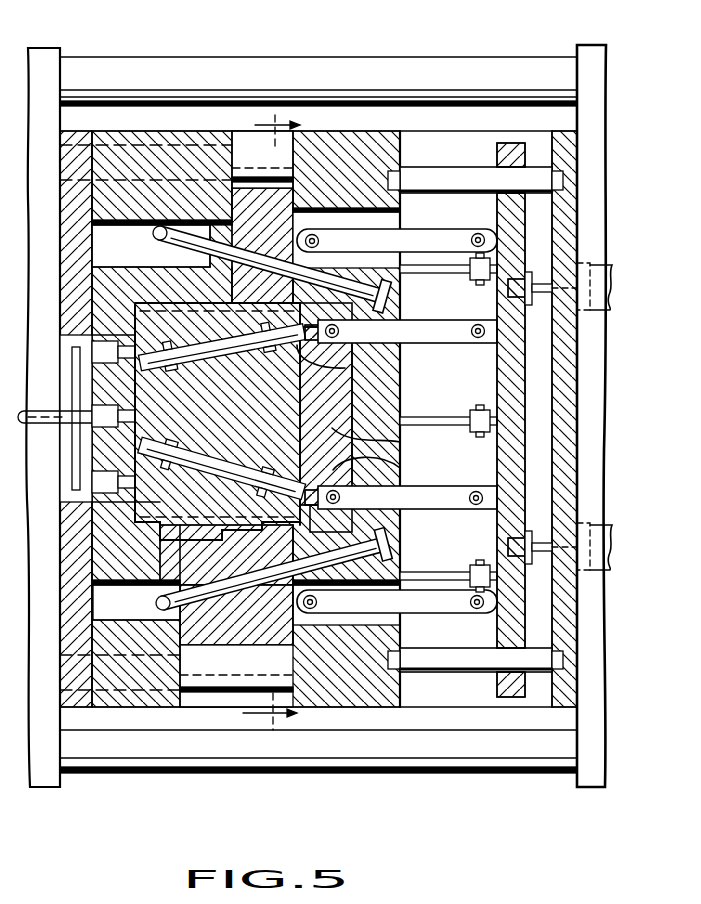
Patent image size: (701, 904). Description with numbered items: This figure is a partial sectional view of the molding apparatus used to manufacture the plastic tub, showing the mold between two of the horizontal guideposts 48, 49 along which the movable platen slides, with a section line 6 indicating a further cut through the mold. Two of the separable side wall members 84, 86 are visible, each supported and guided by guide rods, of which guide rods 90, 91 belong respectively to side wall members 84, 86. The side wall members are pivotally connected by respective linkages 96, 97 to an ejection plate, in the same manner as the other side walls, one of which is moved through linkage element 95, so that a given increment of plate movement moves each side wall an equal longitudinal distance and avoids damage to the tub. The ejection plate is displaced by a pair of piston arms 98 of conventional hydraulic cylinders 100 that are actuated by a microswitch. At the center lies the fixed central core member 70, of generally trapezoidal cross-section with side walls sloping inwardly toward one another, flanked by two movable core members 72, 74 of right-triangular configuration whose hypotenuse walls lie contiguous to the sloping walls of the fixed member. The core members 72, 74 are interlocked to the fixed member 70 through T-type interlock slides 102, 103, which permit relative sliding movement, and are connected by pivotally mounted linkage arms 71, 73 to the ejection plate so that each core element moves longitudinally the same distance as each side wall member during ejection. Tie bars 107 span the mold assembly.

The horizontal guidepost 48 is at (493, 64).
The horizontal guidepost 49 is at (527, 763).
The section line 6- 6 is at (271, 425).
The fixed central core member 70 is at (396, 440).
The linkage arm 71 is at (445, 496).
The movable core member 72 is at (214, 507).
The linkage arm 73 is at (440, 335).
The movable core member 74 is at (183, 341).
The side wall member 84 is at (251, 188).
The side wall member 86 is at (262, 640).
The guide rod 90 is at (160, 236).
The guide rod 91 is at (160, 603).
The linkage element 95 is at (441, 272).
The linkage 96 is at (385, 240).
The linkage 97 is at (420, 605).
The piston arm 98 is at (545, 282).
The hydraulic cylinder 100 is at (614, 280).
The T-type interlock slide 102 is at (397, 369).
The T-type interlock slide 103 is at (396, 467).
The tie bar 107 is at (466, 152).